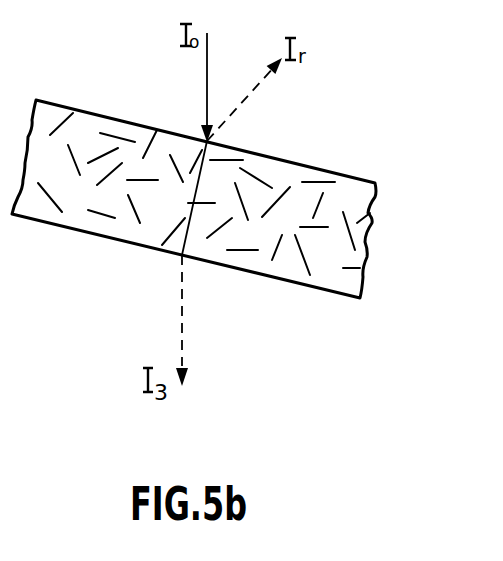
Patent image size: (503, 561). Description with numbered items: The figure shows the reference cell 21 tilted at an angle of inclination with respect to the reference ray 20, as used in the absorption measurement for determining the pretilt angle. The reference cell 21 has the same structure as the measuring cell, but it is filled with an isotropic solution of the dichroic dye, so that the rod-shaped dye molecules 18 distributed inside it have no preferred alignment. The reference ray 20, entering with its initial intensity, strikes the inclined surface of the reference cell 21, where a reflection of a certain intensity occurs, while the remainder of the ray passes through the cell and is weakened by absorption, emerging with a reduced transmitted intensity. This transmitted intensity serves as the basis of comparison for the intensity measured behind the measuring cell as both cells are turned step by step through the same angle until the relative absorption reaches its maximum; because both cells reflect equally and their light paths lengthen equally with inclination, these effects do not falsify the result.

The dye molecules 18 is at (80, 176).
The reference ray 20 is at (207, 59).
The reference cell 21 is at (323, 164).